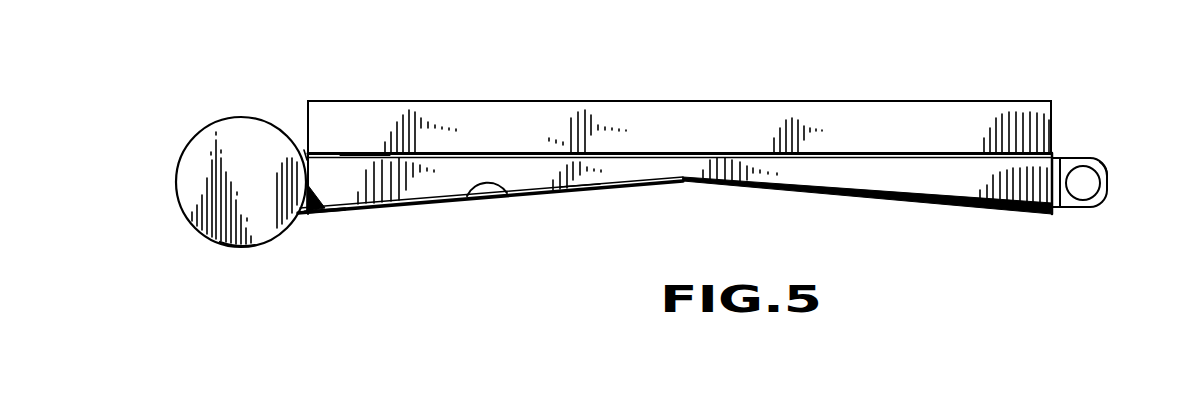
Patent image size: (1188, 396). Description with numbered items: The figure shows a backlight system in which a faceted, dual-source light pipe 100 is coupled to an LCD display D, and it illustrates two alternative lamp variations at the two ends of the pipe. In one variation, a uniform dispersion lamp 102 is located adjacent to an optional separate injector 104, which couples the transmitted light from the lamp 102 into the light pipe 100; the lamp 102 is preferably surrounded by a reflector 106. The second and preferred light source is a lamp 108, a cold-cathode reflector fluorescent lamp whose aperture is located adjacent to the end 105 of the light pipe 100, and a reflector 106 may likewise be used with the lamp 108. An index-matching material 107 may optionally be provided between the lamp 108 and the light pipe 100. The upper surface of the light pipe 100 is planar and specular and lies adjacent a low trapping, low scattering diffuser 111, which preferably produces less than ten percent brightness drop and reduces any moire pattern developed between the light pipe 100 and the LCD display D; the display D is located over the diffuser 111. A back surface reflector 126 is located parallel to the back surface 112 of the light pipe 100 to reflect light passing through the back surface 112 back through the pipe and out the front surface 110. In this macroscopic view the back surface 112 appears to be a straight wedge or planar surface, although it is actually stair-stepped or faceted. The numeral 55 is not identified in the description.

The roller 55 is at (236, 115).
The light pipe 100 is at (930, 183).
The uniform dispersion lamp 102 is at (1083, 188).
The separate injector 104 is at (1062, 208).
The end of the light pipe 105 is at (326, 216).
The reflector 106 is at (1108, 174).
The index-matching material 107 is at (305, 157).
The lamp 108 is at (236, 247).
The front surface 110 is at (362, 153).
The diffuser 111 is at (1058, 152).
The back surface 112 is at (508, 201).
The back surface reflector 126 is at (578, 190).
The LCD D is at (1053, 114).